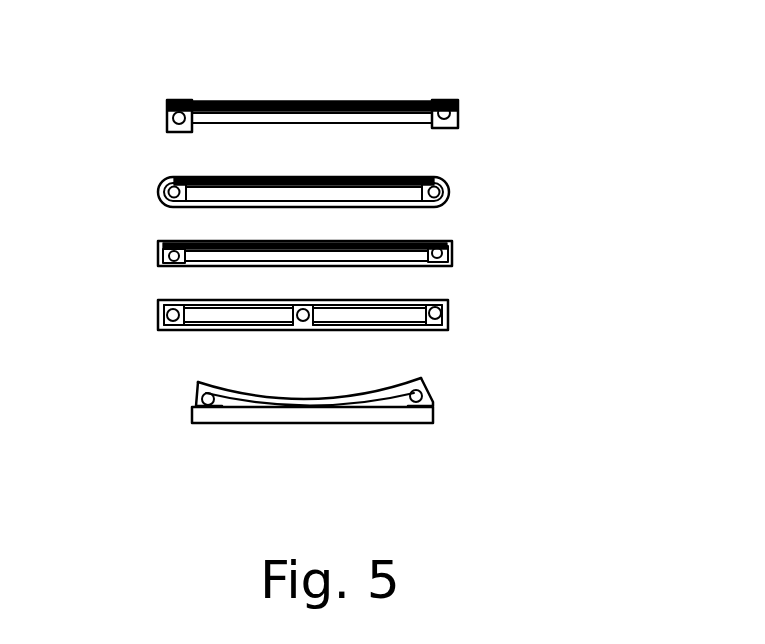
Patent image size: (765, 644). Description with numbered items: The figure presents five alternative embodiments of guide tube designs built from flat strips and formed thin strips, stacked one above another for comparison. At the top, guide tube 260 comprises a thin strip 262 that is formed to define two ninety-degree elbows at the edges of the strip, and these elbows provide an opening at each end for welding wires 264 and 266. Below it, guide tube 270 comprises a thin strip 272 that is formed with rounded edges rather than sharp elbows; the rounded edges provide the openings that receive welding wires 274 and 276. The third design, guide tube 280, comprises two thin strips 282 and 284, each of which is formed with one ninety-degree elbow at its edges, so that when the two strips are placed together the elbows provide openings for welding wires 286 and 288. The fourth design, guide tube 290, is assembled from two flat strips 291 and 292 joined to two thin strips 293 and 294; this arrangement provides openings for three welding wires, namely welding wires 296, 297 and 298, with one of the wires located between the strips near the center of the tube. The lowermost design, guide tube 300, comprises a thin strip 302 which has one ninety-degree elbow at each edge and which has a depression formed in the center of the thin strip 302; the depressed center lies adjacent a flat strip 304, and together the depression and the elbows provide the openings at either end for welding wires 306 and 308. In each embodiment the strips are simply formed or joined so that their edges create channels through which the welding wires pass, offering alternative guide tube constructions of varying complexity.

The guide tube 260 is at (445, 65).
The top plate 262 is at (232, 100).
The welding wire 264 is at (167, 112).
The welding wire 266 is at (460, 111).
The guide tube 270 is at (465, 160).
The thin strip 272 is at (260, 178).
The welding wire 274 is at (160, 195).
The welding wire 276 is at (450, 187).
The guide tube 280 is at (468, 225).
The thin strip 282 is at (265, 243).
The thin strip 284 is at (275, 266).
The welding wire 286 is at (162, 255).
The welding wire 288 is at (455, 247).
The guide tube 290 is at (477, 294).
The flat strip 291 is at (217, 323).
The flat strip 292 is at (340, 328).
The thin strip 293 is at (315, 300).
The thin strip 294 is at (310, 326).
The welding wire 296 is at (162, 318).
The welding wire 297 is at (290, 321).
The welding wire 298 is at (450, 320).
The guide tube 300 is at (478, 397).
The thin strip 302 is at (313, 398).
The flat strip 304 is at (323, 420).
The welding wire 306 is at (198, 402).
The welding wire 308 is at (422, 407).